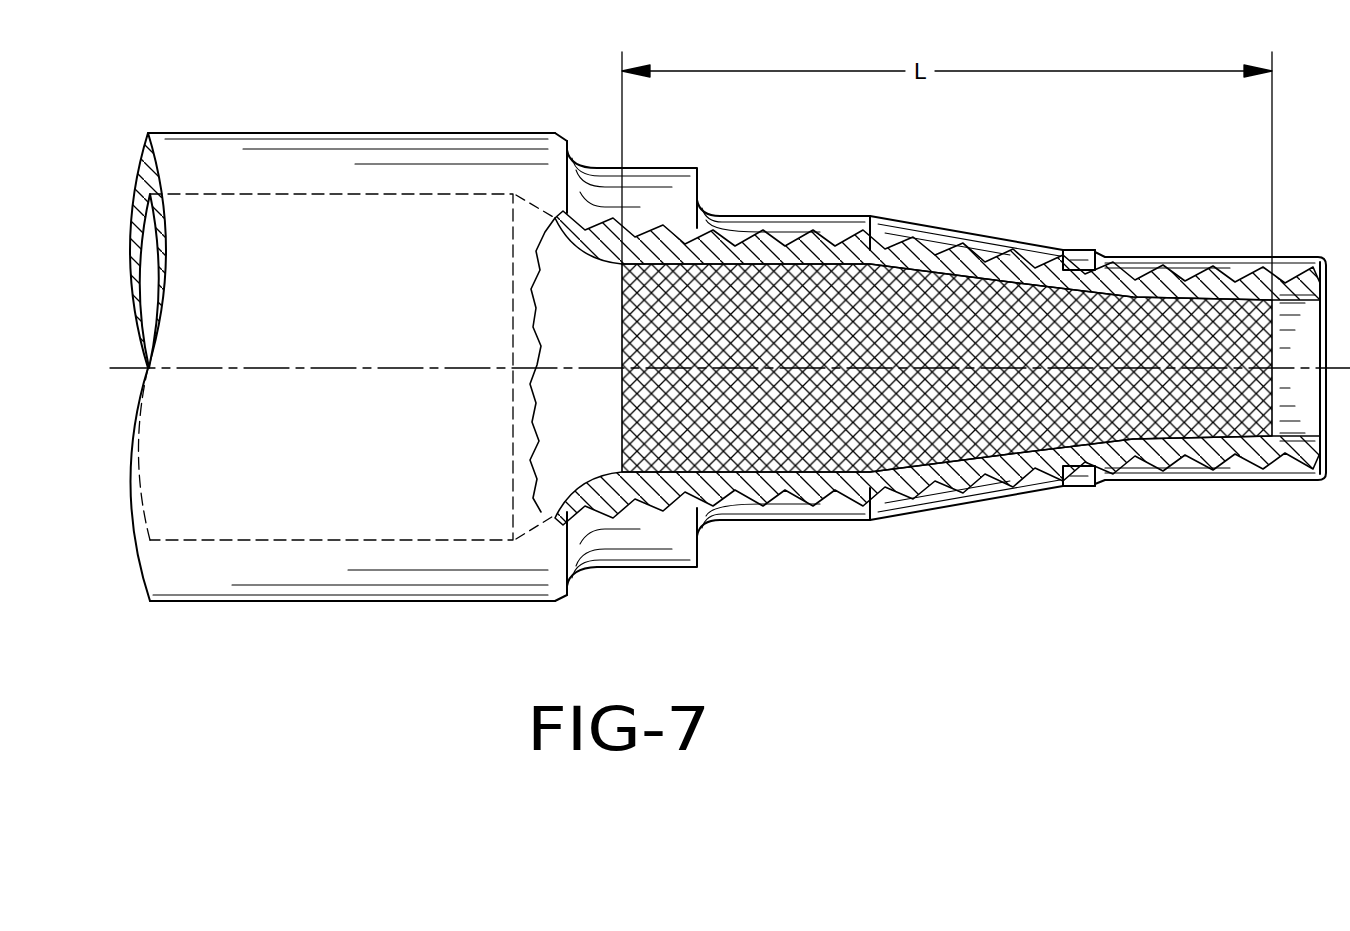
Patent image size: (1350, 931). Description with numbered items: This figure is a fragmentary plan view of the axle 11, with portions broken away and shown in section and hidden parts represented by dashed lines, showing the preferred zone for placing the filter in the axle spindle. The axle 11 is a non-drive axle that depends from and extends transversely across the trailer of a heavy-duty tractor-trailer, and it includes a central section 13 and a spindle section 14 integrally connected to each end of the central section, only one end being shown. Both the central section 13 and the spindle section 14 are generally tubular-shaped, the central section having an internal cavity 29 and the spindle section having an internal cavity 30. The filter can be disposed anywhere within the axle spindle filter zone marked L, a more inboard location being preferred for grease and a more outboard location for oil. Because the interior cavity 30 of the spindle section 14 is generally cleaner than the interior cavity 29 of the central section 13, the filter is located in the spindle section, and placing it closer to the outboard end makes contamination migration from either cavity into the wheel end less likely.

The axle 11 is at (355, 134).
The central section 13 is at (271, 133).
The spindle section 14 is at (608, 168).
The internal cavity 29 is at (139, 242).
The internal cavity 30 is at (662, 266).